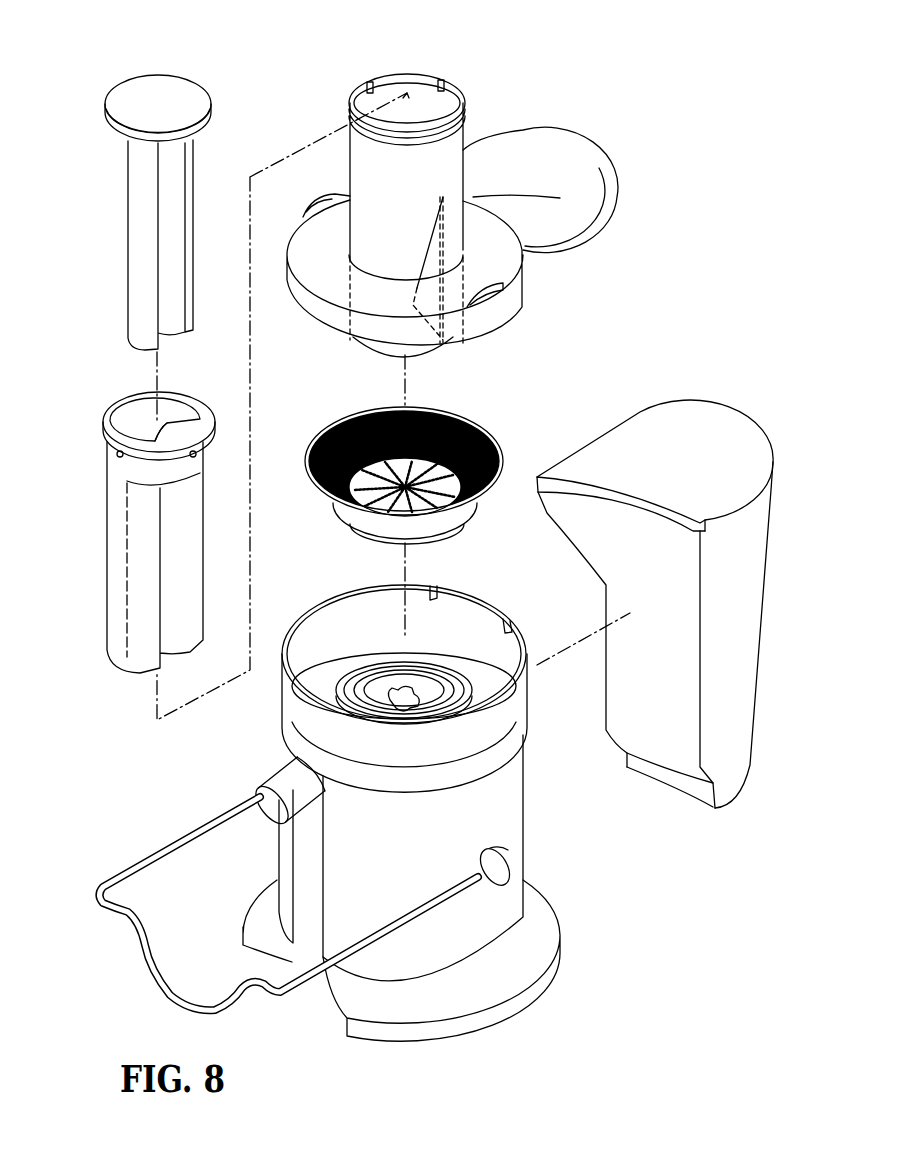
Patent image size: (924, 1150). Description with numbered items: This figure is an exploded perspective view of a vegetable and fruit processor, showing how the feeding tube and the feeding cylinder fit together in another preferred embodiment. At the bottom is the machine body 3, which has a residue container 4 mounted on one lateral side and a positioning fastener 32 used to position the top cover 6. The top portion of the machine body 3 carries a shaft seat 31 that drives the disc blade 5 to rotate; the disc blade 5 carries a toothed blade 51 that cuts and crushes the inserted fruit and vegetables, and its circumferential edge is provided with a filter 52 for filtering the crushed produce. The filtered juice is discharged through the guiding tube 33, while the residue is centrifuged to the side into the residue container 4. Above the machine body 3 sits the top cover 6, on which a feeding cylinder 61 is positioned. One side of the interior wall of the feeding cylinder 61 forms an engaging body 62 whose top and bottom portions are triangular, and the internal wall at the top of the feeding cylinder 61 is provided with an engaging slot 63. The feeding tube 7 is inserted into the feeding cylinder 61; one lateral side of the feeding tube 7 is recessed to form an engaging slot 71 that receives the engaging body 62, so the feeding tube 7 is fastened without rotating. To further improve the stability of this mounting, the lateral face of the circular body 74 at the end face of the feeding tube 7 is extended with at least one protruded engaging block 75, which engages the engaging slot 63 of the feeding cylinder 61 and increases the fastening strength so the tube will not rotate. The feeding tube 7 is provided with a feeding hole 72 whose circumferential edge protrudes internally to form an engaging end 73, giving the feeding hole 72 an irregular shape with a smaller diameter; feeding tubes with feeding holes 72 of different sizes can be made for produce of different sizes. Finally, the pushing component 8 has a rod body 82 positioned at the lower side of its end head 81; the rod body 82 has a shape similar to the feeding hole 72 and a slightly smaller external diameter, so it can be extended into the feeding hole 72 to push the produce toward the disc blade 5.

The machine body 3 is at (372, 813).
The shaft seat 31 is at (427, 686).
The positioning fastener 32 is at (127, 880).
The guiding tube 33 is at (280, 790).
The residue container 4 is at (743, 830).
The disc blade 5 is at (389, 478).
The toothed blade 51 is at (453, 420).
The filter 52 is at (335, 428).
The top cover 6 is at (447, 207).
The feeding cylinder 61 is at (457, 193).
The engaging body 62 is at (467, 337).
The engaging slot 63 is at (372, 118).
The feeding tube 7 is at (142, 511).
The engaging slot 71 is at (168, 553).
The feeding hole 72 is at (135, 435).
The engaging end 73 is at (168, 423).
The circular body 74 is at (103, 427).
The engaging block 75 is at (118, 458).
The pushing component 8 is at (127, 191).
The end head 81 is at (162, 92).
The rod body 82 is at (133, 262).